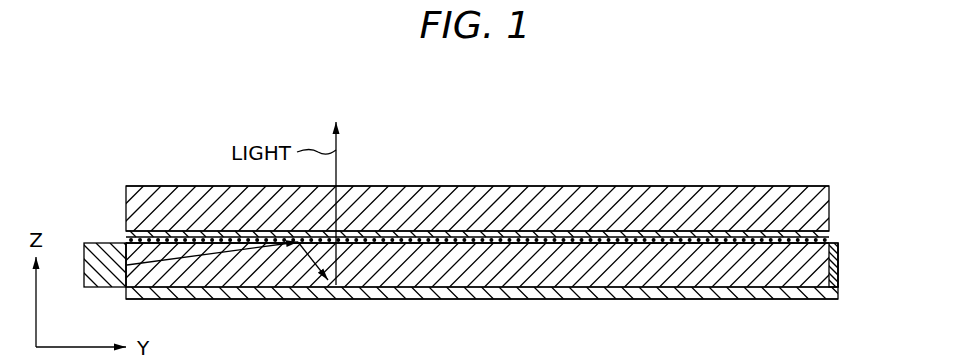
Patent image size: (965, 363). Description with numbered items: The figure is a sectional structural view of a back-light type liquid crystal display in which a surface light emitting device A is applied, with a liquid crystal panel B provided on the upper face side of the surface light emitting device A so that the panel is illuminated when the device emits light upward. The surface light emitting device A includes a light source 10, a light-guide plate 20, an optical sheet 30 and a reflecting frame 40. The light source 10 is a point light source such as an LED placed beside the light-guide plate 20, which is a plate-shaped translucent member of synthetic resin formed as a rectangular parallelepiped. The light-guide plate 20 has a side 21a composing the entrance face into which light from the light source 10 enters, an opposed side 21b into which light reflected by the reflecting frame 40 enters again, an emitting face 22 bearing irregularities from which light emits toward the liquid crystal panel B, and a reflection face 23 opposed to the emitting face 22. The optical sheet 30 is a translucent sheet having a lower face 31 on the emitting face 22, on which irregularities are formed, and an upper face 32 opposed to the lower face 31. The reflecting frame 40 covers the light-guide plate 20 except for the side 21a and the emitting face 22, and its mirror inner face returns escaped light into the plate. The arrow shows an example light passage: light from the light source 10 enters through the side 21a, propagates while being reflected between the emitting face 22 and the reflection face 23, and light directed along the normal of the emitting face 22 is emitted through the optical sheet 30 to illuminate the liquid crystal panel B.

The light source 10 is at (93, 243).
The light-guide plate 20 is at (483, 268).
The side 21a is at (108, 243).
The side 21b is at (833, 273).
The emitting face 22 is at (450, 230).
The reflection face 23 is at (282, 299).
The optical sheet 30 is at (597, 242).
The lower face 31 is at (707, 243).
The upper face 32 is at (707, 246).
The reflecting frame 40 is at (607, 291).
The surface light emitting device A is at (847, 267).
The liquid crystal panel B is at (795, 193).